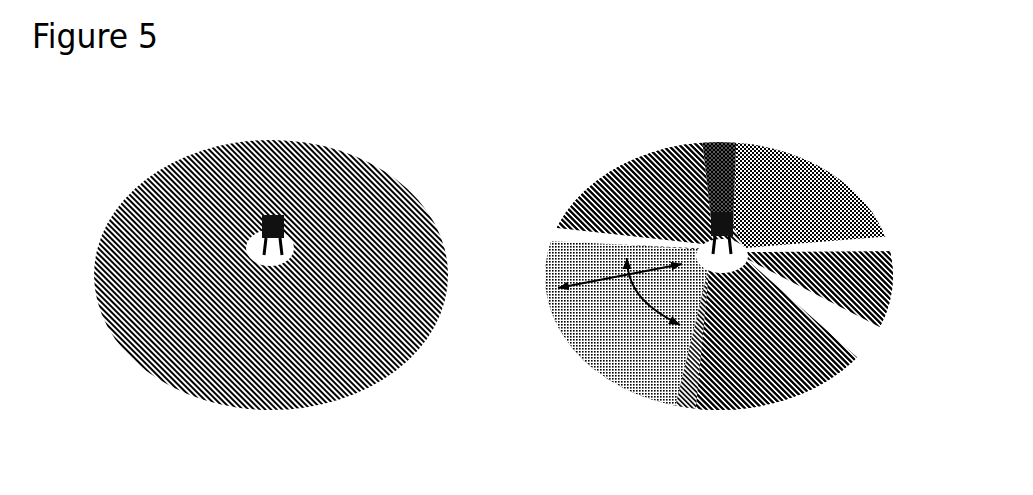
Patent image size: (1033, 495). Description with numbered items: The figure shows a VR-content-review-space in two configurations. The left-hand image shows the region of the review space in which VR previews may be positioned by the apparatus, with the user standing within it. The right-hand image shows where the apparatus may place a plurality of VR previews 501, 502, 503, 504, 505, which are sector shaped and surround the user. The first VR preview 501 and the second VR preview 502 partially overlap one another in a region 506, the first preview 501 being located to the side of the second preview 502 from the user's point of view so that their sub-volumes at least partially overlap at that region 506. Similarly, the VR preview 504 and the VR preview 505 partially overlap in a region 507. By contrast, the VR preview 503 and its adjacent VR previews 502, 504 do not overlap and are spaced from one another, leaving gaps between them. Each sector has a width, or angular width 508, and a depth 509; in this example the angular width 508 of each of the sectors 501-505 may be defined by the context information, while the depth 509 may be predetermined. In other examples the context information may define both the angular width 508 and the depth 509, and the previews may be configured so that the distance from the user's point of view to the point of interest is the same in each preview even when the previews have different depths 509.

The first VR preview 501 is at (562, 340).
The second VR preview 502 is at (783, 400).
The VR preview 503 is at (883, 312).
The VR preview 504 is at (829, 166).
The VR preview 505 is at (638, 152).
The overlap region 506 is at (687, 380).
The overlap region 507 is at (737, 150).
The angular width 508 is at (627, 268).
The depth 509 is at (590, 284).